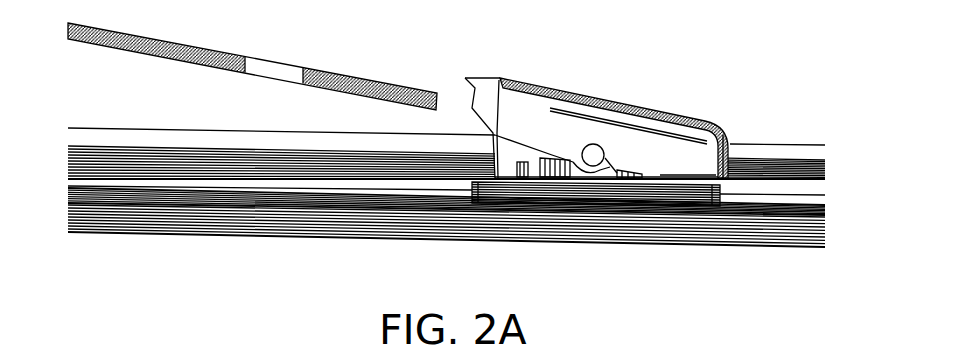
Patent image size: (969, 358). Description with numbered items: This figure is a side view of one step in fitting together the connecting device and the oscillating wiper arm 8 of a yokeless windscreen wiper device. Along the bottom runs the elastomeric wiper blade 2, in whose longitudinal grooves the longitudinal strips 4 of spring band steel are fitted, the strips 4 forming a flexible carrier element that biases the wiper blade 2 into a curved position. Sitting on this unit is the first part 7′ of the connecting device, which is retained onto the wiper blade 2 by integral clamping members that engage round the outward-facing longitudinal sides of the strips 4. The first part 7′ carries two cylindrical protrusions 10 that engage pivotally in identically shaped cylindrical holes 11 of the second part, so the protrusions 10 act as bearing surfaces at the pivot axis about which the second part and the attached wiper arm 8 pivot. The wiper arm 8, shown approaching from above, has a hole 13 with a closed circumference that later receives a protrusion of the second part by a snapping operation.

The wiper blade 2 is at (726, 243).
The longitudinal strips 4 is at (378, 204).
The first part 7′ is at (550, 186).
The oscillating wiper arm 8 is at (170, 42).
The cylindrical protrusions 10 is at (593, 157).
The cylindrical holes 11 is at (629, 198).
The hole 13 is at (277, 63).